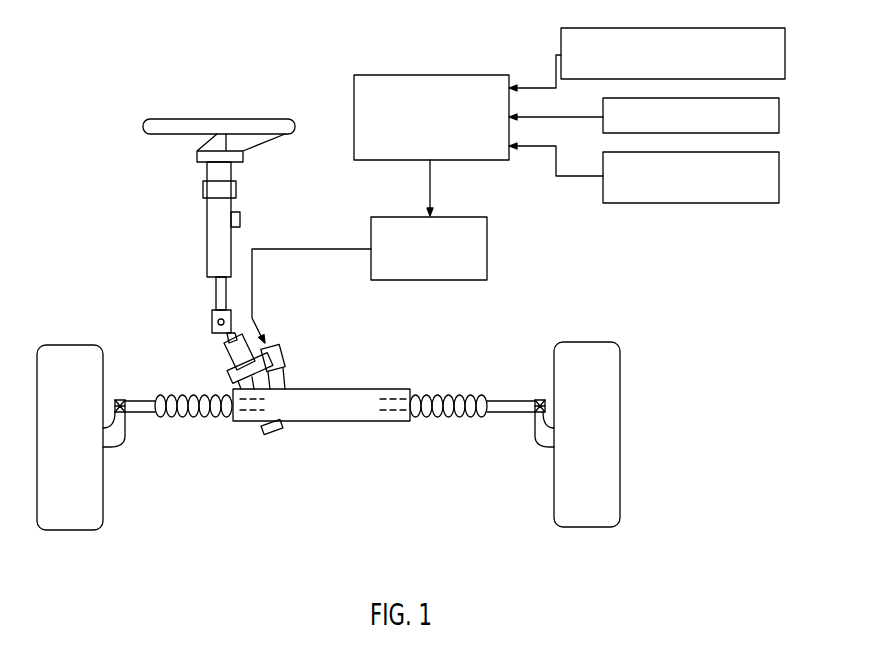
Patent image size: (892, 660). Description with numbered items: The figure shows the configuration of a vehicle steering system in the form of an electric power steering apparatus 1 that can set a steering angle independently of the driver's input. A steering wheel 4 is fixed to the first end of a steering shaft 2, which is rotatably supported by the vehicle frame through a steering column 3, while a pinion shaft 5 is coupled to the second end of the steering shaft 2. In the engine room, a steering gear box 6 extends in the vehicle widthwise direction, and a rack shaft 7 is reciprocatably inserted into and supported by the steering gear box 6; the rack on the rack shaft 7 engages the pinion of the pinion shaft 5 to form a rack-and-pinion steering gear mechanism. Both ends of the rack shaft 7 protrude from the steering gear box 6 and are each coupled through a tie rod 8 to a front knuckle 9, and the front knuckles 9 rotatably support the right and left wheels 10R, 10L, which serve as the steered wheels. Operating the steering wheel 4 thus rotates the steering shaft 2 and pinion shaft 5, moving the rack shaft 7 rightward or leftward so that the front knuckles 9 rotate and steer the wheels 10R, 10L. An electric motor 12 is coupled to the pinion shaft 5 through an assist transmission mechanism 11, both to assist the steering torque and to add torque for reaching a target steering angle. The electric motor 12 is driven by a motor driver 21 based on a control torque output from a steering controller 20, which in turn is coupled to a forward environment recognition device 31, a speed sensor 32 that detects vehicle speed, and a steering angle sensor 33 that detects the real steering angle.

The electric power steering apparatus 1 is at (121, 269).
The steering shaft 2 is at (216, 296).
The steering column 3 is at (207, 232).
The steering wheel 4 is at (220, 119).
The pinion shaft 5 is at (222, 356).
The steering gear box 6 is at (340, 421).
The rack shaft 7 is at (395, 389).
The tie rod 8 is at (146, 412).
The front knuckle 9 is at (118, 442).
The right wheel 10R is at (70, 530).
The left wheel 10L is at (588, 527).
The assist transmission mechanism 11 is at (228, 378).
The electric power steering motor 12 is at (285, 350).
The steering controller 20 is at (433, 75).
The motor driver 21 is at (465, 216).
The forward environment recognition device 31 is at (785, 55).
The speed sensor 32 is at (779, 117).
The steering angle sensor 33 is at (779, 176).